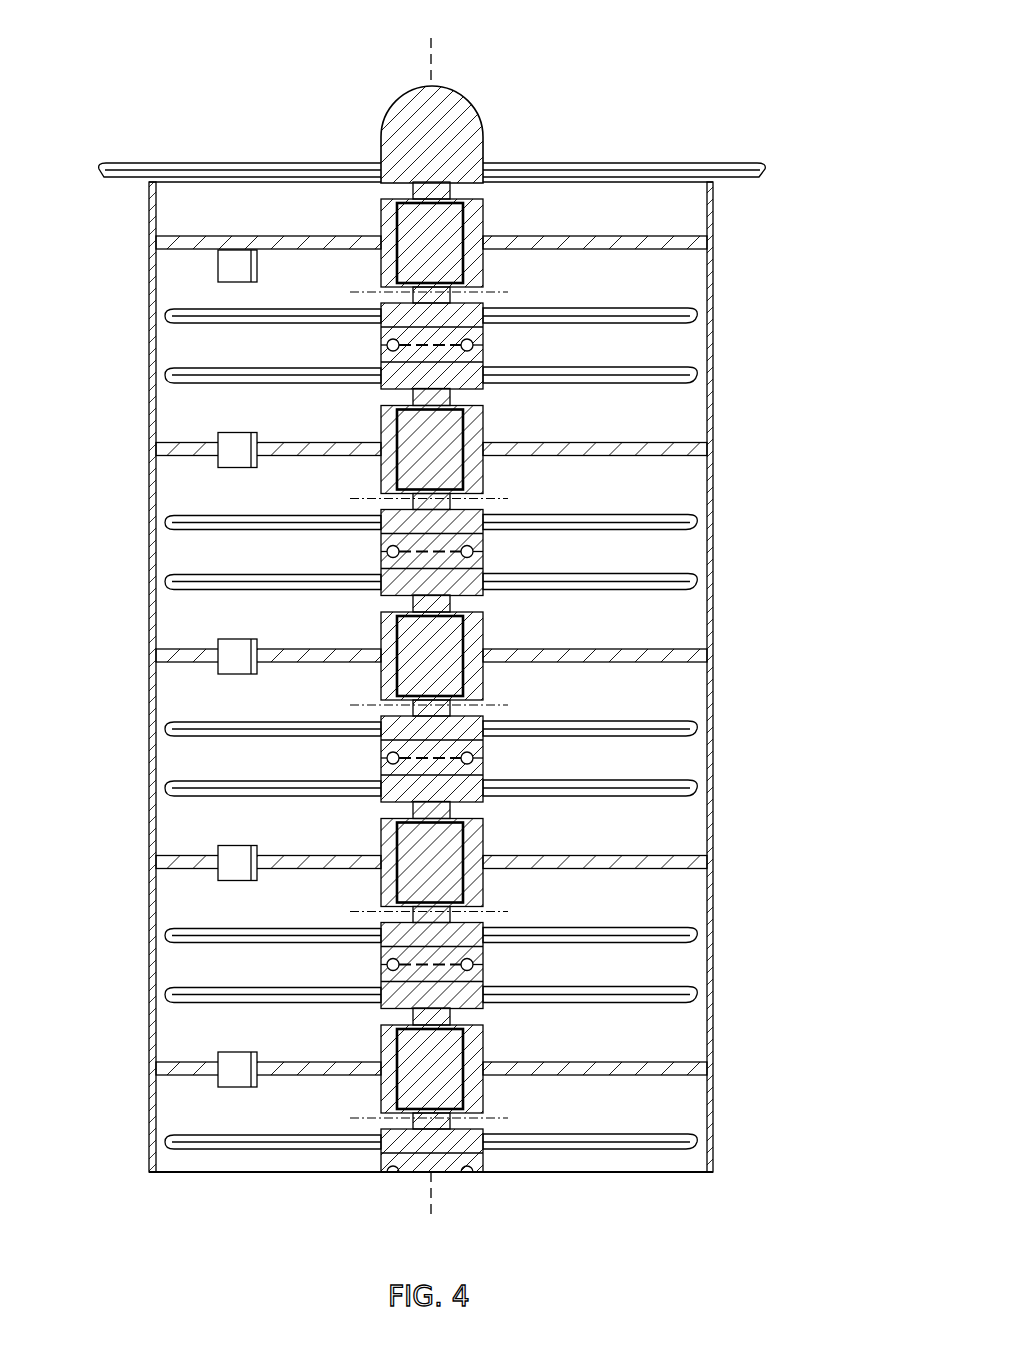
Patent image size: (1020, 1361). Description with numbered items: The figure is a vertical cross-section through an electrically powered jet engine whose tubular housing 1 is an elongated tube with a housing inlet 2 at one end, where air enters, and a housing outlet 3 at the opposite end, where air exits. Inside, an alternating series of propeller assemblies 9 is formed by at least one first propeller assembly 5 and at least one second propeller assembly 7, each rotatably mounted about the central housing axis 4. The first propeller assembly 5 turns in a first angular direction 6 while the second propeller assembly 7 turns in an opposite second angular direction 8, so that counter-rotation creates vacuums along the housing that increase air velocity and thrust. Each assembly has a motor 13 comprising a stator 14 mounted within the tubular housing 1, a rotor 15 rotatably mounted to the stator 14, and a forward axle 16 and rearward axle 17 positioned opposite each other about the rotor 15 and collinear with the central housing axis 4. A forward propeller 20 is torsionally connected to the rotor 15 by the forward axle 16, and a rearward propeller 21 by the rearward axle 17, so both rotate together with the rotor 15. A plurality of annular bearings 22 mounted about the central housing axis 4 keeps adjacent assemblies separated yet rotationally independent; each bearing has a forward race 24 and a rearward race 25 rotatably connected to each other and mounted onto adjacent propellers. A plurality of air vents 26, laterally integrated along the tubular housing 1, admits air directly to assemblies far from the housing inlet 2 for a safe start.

The tubular housing 1 is at (712, 648).
The housing inlet 2 is at (679, 198).
The housing outlet 3 is at (654, 1158).
The central housing axis 4 is at (428, 65).
The first propeller assembly 5 is at (173, 222).
The first angular direction 6 is at (494, 284).
The second propeller assembly 7 is at (173, 428).
The second angular direction 8 is at (341, 706).
The alternating series of propeller assemblies 9 is at (473, 80).
The motor 13 is at (430, 677).
The stator 14 is at (483, 212).
The rotor 15 is at (455, 268).
The forward axle 16 is at (412, 186).
The rearward axle 17 is at (413, 292).
The forward propeller 20 is at (738, 178).
The rearward propeller 21 is at (670, 307).
The plurality of annular bearings 22 is at (426, 752).
The forward race 24 is at (381, 345).
The rearward race 25 is at (483, 347).
The plurality of air vents 26 is at (222, 270).